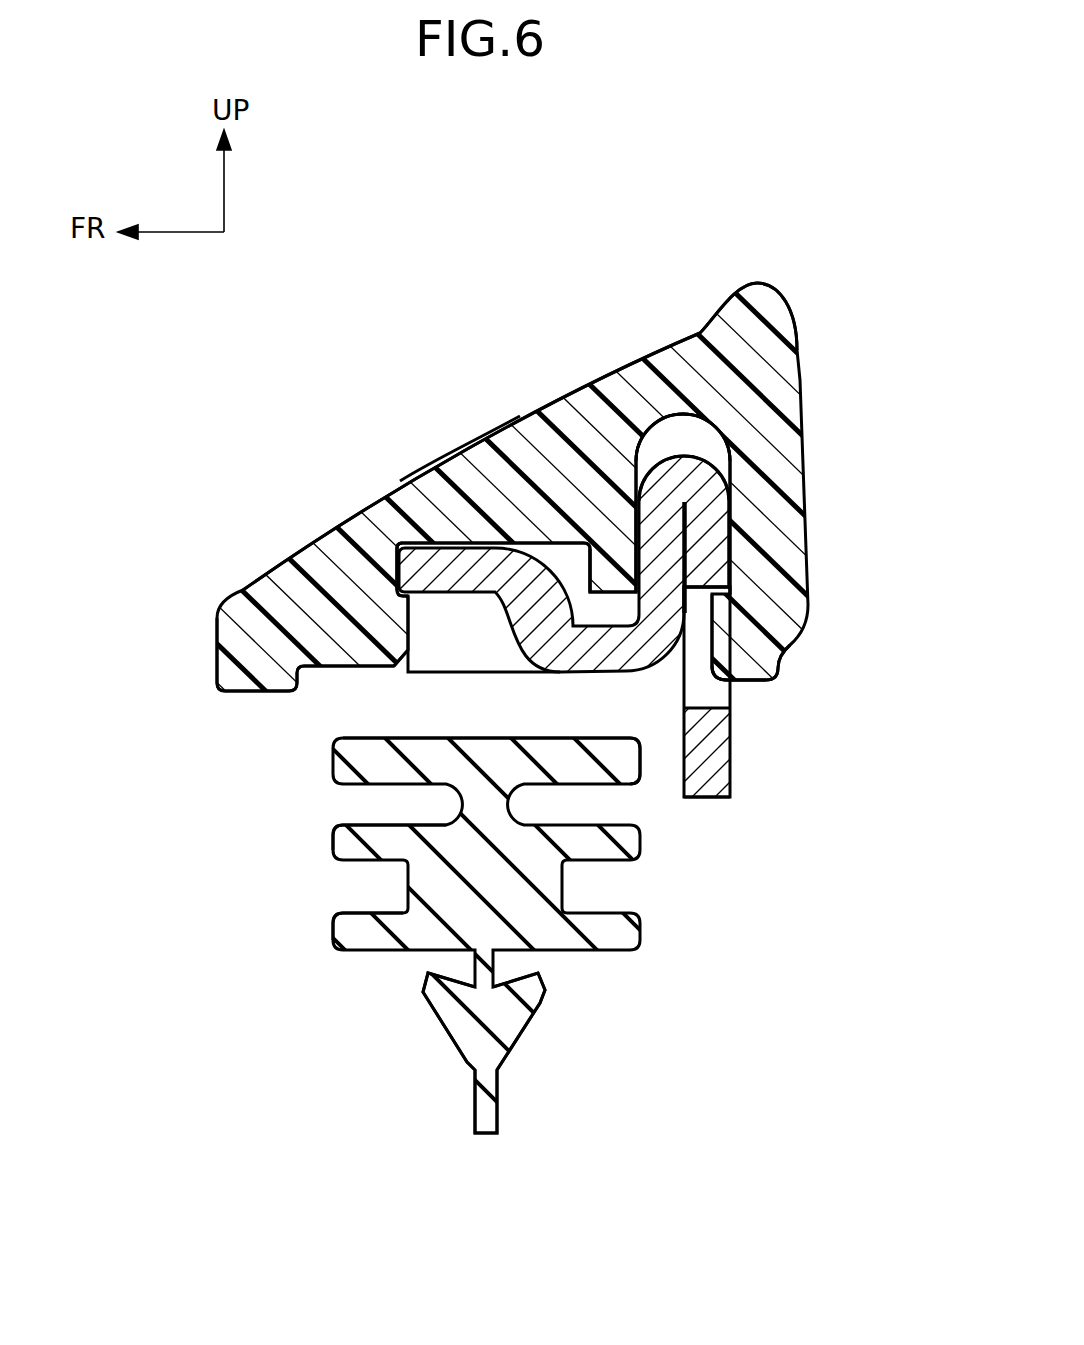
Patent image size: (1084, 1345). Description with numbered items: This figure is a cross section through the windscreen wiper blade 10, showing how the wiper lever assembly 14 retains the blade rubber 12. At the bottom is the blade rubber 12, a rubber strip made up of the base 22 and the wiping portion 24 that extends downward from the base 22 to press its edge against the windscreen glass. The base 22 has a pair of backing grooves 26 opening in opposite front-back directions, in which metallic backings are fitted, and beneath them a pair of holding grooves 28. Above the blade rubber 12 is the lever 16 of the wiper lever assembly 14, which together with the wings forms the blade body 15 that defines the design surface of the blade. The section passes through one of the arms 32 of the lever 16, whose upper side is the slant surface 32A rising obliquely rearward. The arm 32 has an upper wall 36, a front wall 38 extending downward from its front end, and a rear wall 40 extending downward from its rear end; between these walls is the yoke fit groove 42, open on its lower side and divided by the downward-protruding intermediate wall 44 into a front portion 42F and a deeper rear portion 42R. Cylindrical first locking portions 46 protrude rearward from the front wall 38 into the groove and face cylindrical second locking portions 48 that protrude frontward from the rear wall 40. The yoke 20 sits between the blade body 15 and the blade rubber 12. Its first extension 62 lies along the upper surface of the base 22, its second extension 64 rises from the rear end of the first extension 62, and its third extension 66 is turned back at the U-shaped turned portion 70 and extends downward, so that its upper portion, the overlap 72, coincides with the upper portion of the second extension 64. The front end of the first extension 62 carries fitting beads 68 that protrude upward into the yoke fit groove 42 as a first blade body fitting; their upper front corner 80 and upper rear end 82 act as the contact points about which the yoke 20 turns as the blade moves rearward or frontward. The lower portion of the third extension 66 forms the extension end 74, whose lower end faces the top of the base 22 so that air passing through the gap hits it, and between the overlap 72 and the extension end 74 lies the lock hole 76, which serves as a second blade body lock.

The windscreen wiper blade 10 is at (190, 430).
The blade rubber 12 is at (487, 1150).
The wiper lever assembly 14 is at (424, 290).
The blade body 15 is at (814, 282).
The lever 16 is at (788, 279).
The yoke 20 is at (738, 770).
The base 22 is at (333, 765).
The wiping portion 24 is at (520, 1035).
The backing grooves 26 is at (352, 822).
The holding grooves 28 is at (352, 908).
The arm 32 is at (545, 396).
The slant surface 32A is at (467, 441).
The upper wall 36 is at (603, 600).
The front wall 38 is at (215, 655).
The rear wall 40 is at (712, 520).
The yoke fit groove 42 is at (632, 379).
The front portion 42F is at (562, 550).
The rear portion 42R is at (700, 436).
The intermediate wall 44 is at (688, 414).
The first locking portion 46 is at (430, 614).
The second locking portion 48 is at (712, 638).
The first extension 62 is at (583, 677).
The second extension 64 is at (712, 574).
The third extension 66 is at (722, 498).
The fitting beads 68 is at (410, 616).
The turned portion 70 is at (700, 456).
The overlap 72 is at (722, 545).
The extension end 74 is at (731, 790).
The lock hole 76 is at (727, 695).
The upper front corner 80 is at (396, 560).
The upper rear end 82 is at (407, 560).